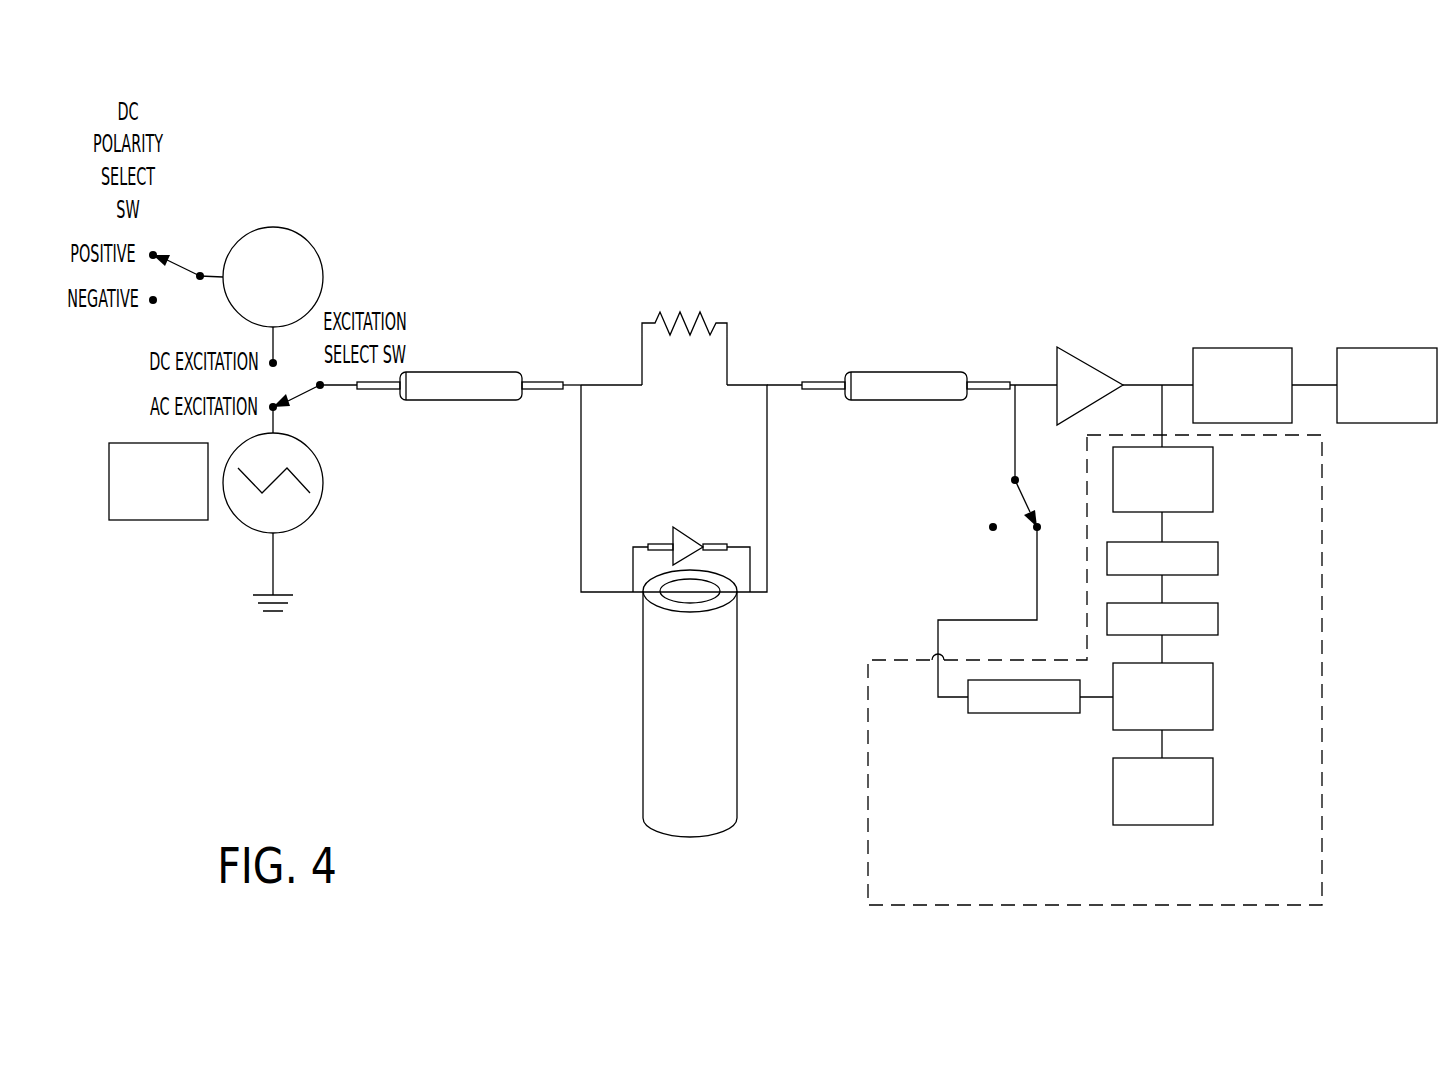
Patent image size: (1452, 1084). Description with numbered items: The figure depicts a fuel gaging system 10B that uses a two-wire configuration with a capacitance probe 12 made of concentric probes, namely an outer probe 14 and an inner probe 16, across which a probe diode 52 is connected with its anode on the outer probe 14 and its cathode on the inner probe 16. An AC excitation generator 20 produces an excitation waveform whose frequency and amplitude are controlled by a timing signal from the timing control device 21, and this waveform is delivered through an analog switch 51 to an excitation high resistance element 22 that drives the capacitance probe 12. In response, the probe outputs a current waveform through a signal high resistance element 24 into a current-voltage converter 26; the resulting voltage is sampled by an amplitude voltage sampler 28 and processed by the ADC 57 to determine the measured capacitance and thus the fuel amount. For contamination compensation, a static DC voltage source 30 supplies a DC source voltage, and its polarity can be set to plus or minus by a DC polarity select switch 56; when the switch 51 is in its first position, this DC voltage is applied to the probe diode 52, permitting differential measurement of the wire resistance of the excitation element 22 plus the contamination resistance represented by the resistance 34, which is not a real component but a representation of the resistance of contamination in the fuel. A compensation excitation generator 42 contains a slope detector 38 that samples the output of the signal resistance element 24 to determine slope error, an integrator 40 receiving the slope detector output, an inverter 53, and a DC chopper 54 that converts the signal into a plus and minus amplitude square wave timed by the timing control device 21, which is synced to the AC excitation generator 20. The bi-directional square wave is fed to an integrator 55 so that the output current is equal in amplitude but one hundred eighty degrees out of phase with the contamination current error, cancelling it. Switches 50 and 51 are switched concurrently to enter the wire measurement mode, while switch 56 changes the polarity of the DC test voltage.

The fuel gaging system 10B is at (1155, 205).
The capacitance probe 12 is at (657, 703).
The outer probe 14 is at (672, 680).
The inner probe 16 is at (690, 607).
The AC excitation generator 20 is at (323, 483).
The timing control device 21 is at (157, 520).
The excitation high resistance element 22 is at (458, 372).
The signal high resistance element 24 is at (905, 372).
The current-voltage converter 26 is at (1094, 362).
The amplitude voltage sampler 28 is at (1244, 348).
The DC voltage source 30 is at (323, 277).
The contamination resistance 34 is at (687, 338).
The slope detector 38 is at (1213, 475).
The integrator 40 is at (1218, 555).
The compensation excitation generator 42 is at (1049, 645).
The switch 50 is at (1022, 497).
The analog switch 51 is at (302, 394).
The probe diode 52 is at (690, 530).
The inverter 53 is at (1218, 615).
The DC chopper 54 is at (1213, 690).
The integrator 55 is at (1020, 713).
The DC polarity select switch 56 is at (189, 268).
The ADC 57 is at (1389, 348).